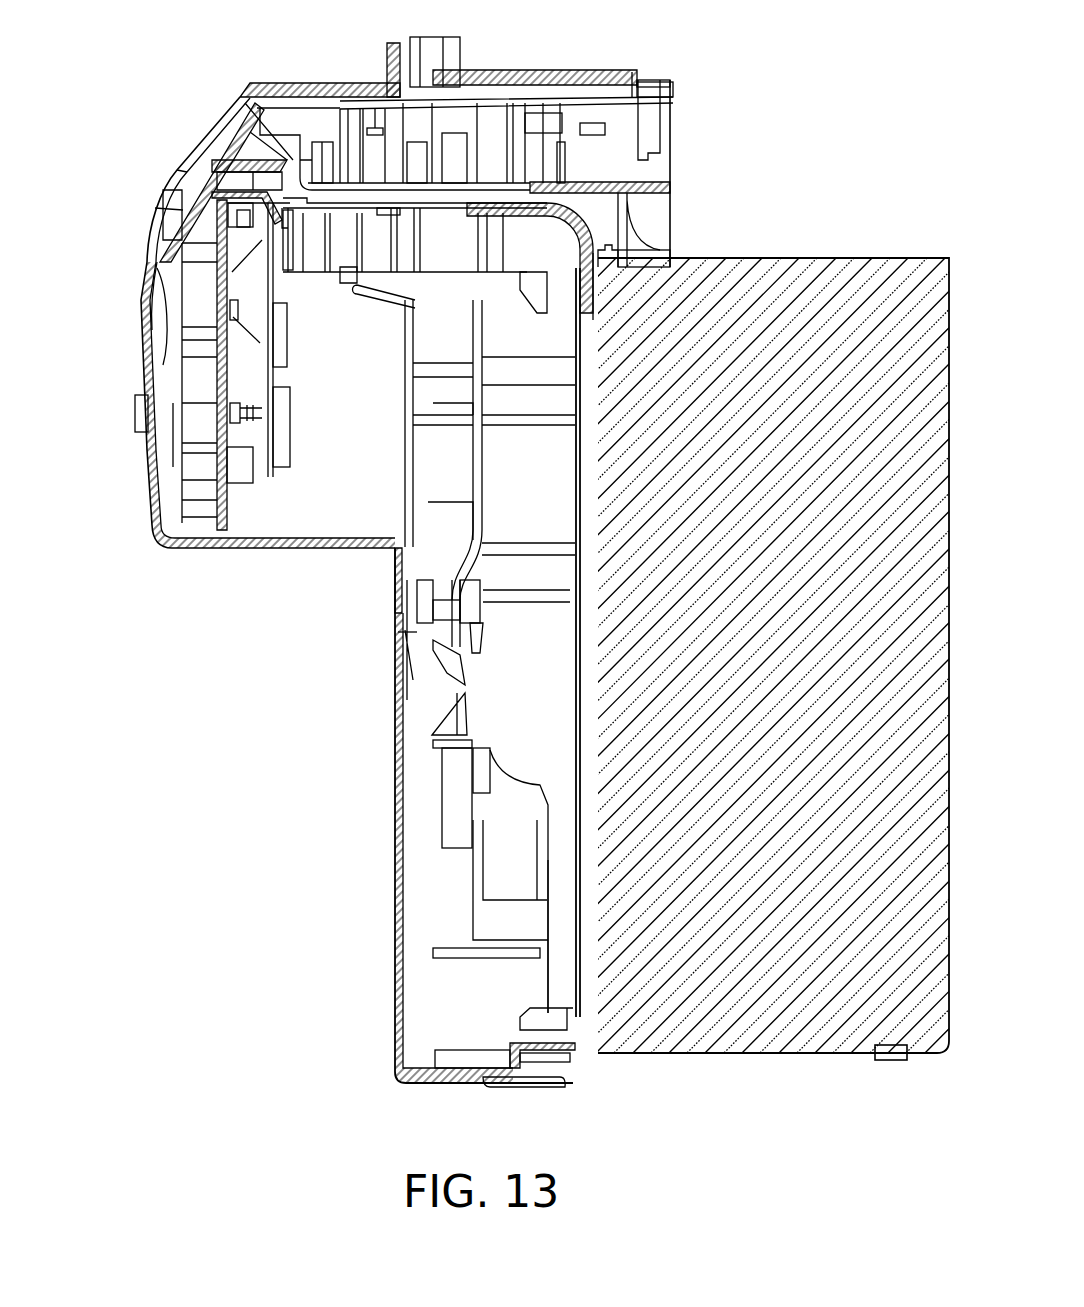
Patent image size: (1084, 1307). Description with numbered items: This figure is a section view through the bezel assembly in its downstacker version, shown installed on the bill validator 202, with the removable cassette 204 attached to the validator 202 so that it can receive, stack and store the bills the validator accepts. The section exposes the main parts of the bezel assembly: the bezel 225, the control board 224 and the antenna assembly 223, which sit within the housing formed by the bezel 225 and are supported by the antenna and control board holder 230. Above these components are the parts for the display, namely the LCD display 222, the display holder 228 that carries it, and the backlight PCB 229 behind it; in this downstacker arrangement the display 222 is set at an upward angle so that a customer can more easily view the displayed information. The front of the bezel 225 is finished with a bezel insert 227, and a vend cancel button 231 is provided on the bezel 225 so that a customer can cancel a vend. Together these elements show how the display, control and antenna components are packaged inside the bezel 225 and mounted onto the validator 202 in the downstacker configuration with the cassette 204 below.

The bill validator 202 is at (397, 883).
The cassette 204 is at (863, 257).
The LCD display 222 is at (210, 133).
The antenna assembly 223 is at (175, 300).
The control board 224 is at (260, 357).
The bezel 225 is at (157, 545).
The bezel insert 227 is at (157, 262).
The display holder 228 is at (253, 90).
The backlight PCB 229 is at (327, 92).
The antenna and control board holder 230 is at (213, 270).
The vend cancel button 231 is at (140, 430).